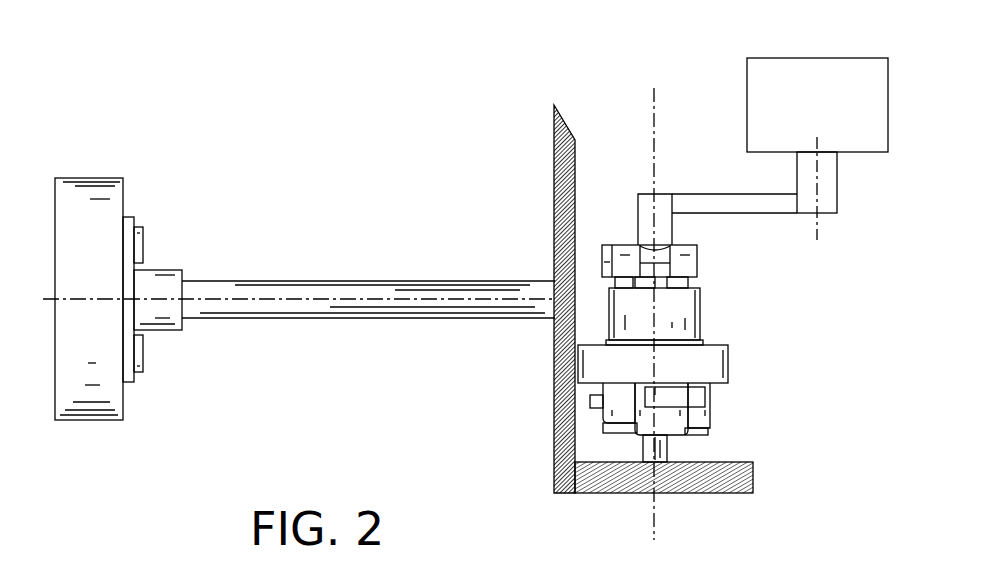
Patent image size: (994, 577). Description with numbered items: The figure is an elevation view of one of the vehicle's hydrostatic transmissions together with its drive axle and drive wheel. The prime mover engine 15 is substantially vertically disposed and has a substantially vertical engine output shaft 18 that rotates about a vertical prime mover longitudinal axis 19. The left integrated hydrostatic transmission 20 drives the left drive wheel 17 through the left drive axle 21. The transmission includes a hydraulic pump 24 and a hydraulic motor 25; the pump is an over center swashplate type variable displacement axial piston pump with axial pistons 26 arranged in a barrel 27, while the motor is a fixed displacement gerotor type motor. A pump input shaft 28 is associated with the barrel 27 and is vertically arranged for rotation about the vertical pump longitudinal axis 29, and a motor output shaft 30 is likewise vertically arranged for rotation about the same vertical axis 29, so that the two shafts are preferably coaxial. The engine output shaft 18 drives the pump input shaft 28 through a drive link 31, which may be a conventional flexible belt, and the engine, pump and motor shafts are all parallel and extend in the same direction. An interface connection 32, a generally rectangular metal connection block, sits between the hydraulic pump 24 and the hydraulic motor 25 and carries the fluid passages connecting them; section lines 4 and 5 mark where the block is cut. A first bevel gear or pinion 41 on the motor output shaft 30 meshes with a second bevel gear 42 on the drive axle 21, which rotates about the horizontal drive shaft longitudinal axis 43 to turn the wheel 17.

The prime mover engine 15 is at (850, 58).
The left rear drive wheel 17 is at (82, 199).
The engine output shaft 18 is at (838, 181).
The prime mover longitudinal axis 19 is at (818, 231).
The left integrated hydrostatic transmission 20 is at (842, 328).
The left drive axle 21 is at (325, 308).
The hydraulic pump 24 is at (700, 298).
The hydraulic motor 25 is at (712, 427).
The axial pistons 26 is at (693, 283).
The barrel 27 is at (666, 375).
The pump input shaft 28 is at (638, 205).
The pump longitudinal axis 29 is at (652, 105).
The motor output shaft 30 is at (667, 447).
The drive link 31 is at (718, 194).
The interface connection 32 is at (689, 363).
The first bevel gear or pinion 41 is at (702, 494).
The second bevel gear 42 is at (555, 406).
The drive shaft longitudinal axis 43 is at (378, 298).
The upper clearance dimension 4 is at (583, 343).
The lower clearance dimension 5 is at (583, 385).